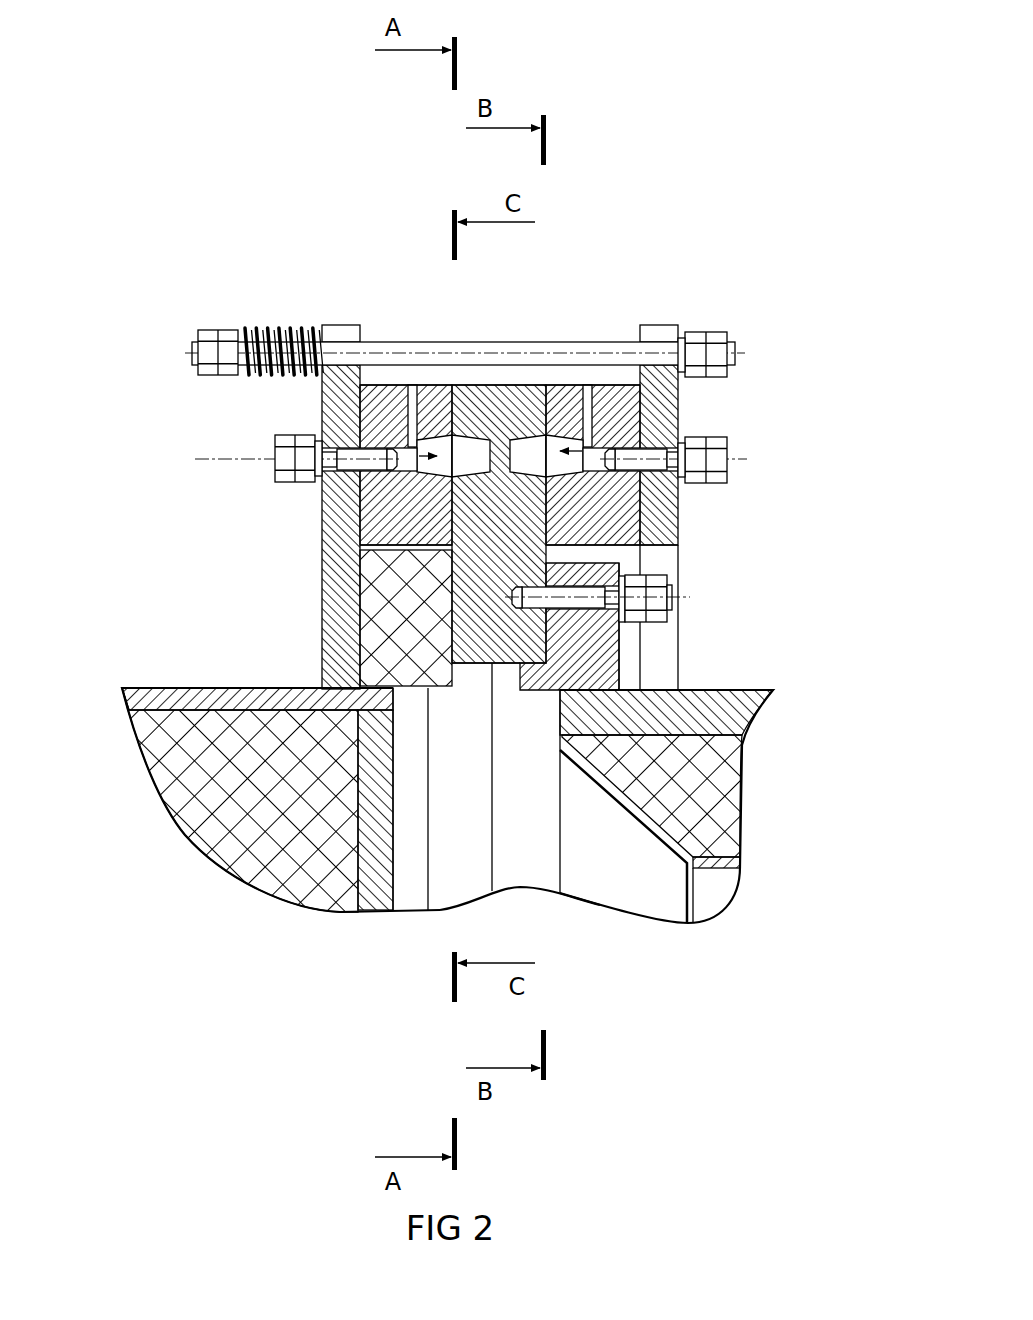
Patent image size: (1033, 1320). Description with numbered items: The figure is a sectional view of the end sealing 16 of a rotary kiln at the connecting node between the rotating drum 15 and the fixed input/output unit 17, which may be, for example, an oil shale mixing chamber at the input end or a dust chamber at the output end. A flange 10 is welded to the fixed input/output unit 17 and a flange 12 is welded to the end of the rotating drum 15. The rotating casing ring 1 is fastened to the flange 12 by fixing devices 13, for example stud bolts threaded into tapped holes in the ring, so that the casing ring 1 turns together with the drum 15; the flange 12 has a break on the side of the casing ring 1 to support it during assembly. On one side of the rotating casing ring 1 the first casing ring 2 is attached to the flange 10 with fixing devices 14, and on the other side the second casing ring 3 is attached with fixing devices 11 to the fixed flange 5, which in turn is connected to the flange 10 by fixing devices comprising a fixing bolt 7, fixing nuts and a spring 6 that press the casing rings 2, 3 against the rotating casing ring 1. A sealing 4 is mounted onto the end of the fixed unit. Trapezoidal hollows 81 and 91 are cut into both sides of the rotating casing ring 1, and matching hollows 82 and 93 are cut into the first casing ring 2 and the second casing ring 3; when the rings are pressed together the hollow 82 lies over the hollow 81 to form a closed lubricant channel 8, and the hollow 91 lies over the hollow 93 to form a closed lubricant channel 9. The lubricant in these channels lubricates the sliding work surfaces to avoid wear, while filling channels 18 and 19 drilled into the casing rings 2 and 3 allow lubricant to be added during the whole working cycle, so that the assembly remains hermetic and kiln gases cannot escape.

The rotating casing ring 1 is at (490, 500).
The first casing ring 2 is at (400, 525).
The second casing ring 3 is at (597, 507).
The sealing 4 is at (398, 588).
The fixed flange 5 is at (670, 493).
The spring 6 is at (250, 327).
The fixing bolt 7 is at (665, 357).
The lubricant channel 8 is at (313, 436).
The lubricant channel 9 is at (590, 458).
The flange 10 is at (340, 648).
The fixing devices 11 is at (680, 456).
The flange 12 is at (597, 660).
The fixing devices 13 is at (643, 602).
The fixing devices 14 is at (303, 453).
The rotating drum 15 is at (657, 883).
The end sealing 16 is at (672, 222).
The fixed input/output unit 17 is at (243, 843).
The filling channel 18 is at (408, 415).
The filling channel 19 is at (590, 413).
The hollow 81 is at (472, 447).
The hollow 82 is at (446, 443).
The hollow 91 is at (527, 445).
The hollow 93 is at (563, 438).